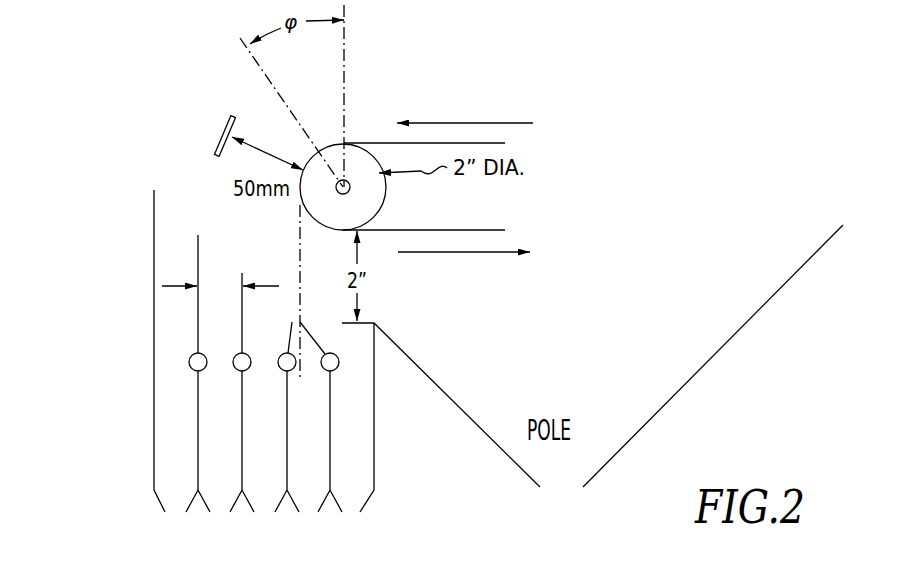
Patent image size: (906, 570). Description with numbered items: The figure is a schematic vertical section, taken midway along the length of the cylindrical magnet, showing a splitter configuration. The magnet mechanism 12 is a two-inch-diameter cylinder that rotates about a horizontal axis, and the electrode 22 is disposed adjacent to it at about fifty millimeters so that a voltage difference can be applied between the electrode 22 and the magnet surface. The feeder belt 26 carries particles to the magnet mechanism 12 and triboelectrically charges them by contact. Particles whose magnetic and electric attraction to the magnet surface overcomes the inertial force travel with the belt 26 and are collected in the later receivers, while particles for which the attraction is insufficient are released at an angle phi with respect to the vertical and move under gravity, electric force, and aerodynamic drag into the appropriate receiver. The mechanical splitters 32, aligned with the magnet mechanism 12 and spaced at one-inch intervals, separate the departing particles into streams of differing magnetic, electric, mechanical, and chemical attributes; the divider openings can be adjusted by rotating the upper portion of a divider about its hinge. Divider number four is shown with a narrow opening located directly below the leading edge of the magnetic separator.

The magnet mechanism 12 is at (350, 138).
The electrode 22 is at (156, 131).
The feeder belt 26 is at (428, 227).
The mechanical splitters 32 is at (141, 441).